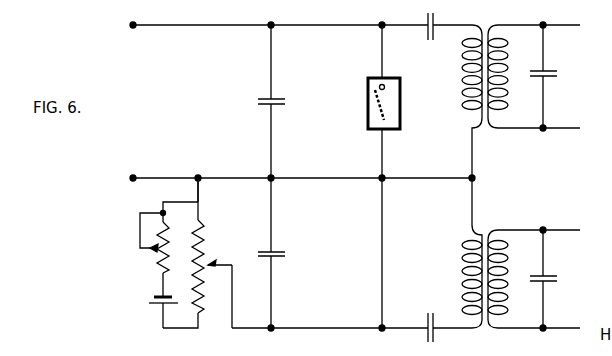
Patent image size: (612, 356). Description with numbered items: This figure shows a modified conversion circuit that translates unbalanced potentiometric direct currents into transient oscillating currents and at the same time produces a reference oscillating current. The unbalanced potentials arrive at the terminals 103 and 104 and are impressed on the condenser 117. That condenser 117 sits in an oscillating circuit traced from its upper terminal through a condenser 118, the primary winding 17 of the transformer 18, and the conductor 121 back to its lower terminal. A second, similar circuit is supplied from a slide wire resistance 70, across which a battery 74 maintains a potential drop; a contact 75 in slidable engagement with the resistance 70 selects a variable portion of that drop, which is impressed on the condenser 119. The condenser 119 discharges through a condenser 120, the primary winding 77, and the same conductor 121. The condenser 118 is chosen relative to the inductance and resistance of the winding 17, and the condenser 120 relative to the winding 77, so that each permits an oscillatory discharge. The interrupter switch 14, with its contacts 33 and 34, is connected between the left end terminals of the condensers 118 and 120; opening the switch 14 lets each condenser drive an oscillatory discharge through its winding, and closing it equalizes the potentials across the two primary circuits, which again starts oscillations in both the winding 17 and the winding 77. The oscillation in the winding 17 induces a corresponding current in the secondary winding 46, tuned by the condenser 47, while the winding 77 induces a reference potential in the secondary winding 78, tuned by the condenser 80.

The terminal 103 is at (133, 25).
The terminal 104 is at (133, 178).
The conductor 121 is at (335, 178).
The condenser 117 is at (262, 102).
The condenser 119 is at (287, 254).
The condenser 118 is at (428, 46).
The condenser 120 is at (428, 312).
The interrupter switch 14 is at (382, 176).
The contact 33 is at (386, 87).
The contact 34 is at (376, 105).
The transformer 18 is at (511, 89).
The transformer primary winding 17 is at (466, 68).
The secondary winding 46 is at (508, 67).
The condenser 47 is at (558, 74).
The primary winding 77 is at (464, 268).
The secondary winding 78 is at (510, 272).
The condenser 80 is at (556, 278).
The slide wire resistance 70 is at (205, 235).
The contact 75 is at (210, 262).
The battery 74 is at (160, 301).